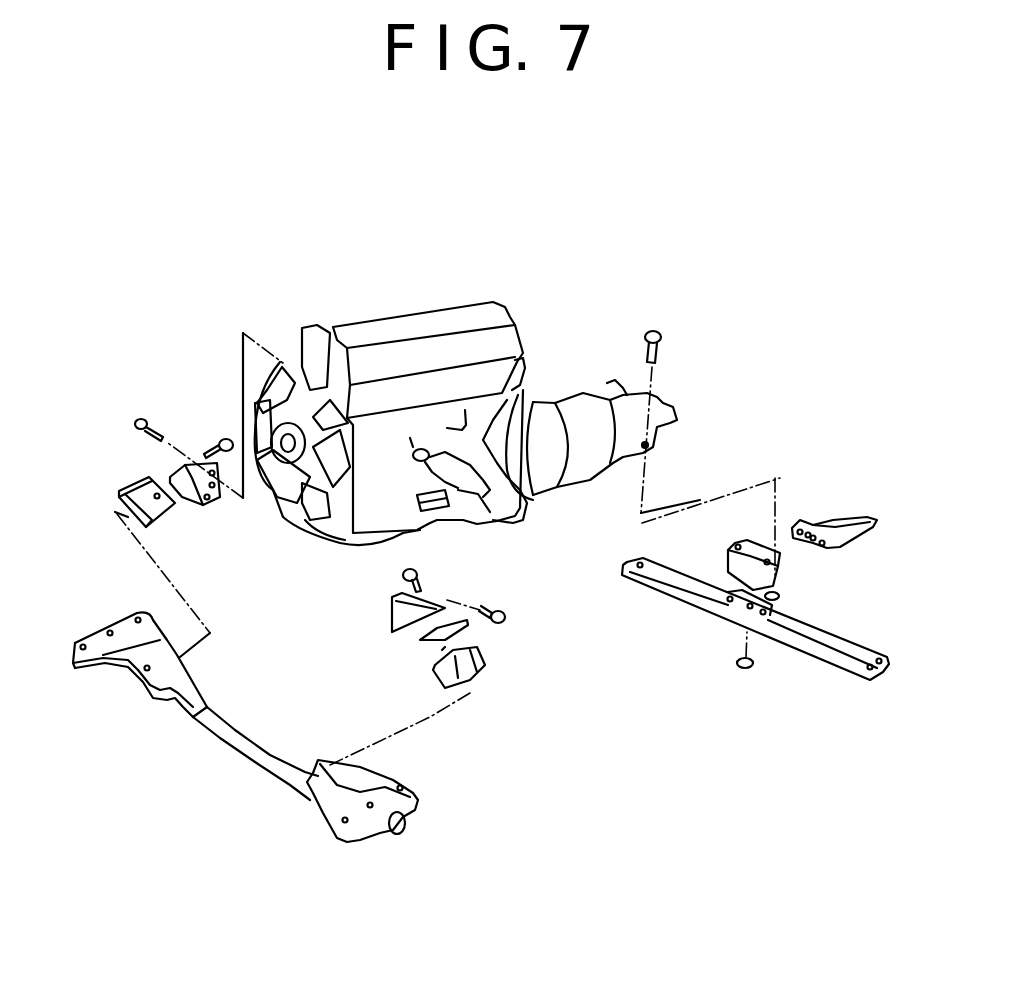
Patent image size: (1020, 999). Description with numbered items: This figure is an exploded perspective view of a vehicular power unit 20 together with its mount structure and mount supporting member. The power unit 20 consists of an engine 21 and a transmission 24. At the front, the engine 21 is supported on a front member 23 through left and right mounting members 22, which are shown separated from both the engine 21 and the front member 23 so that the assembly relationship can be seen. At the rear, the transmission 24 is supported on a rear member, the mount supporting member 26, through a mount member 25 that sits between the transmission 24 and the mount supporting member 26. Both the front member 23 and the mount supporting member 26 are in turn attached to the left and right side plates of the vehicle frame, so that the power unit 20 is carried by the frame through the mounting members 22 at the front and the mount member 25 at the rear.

The vehicular power unit 20 is at (466, 359).
The engine 21 is at (420, 300).
The mounting members 22 is at (138, 481).
The front member 23 is at (233, 757).
The transmission 24 is at (580, 393).
The mount member 25 is at (780, 556).
The mount supporting member 26 is at (815, 660).